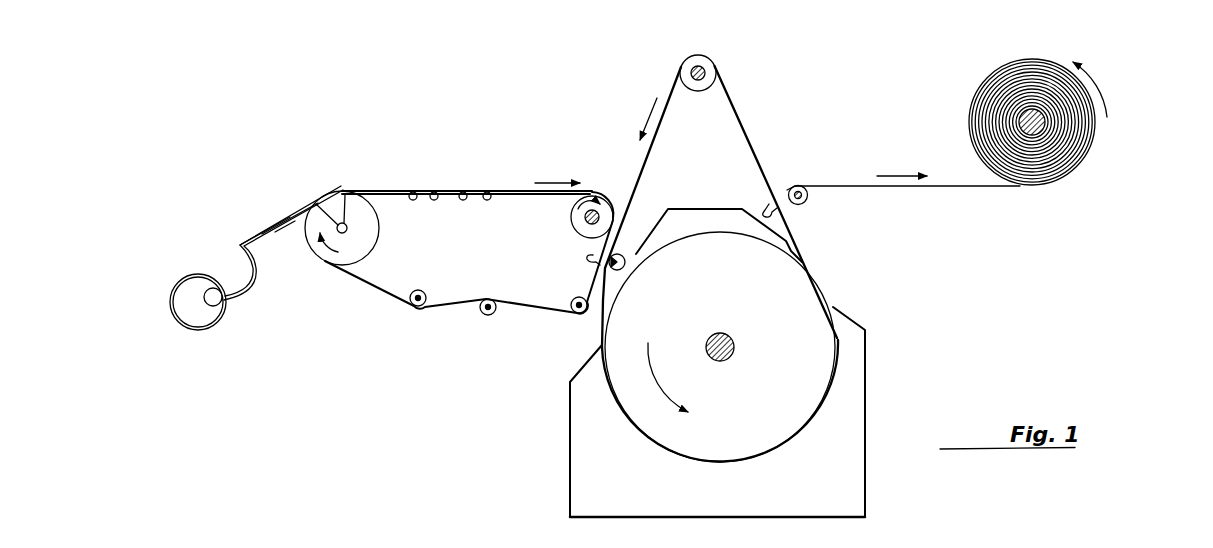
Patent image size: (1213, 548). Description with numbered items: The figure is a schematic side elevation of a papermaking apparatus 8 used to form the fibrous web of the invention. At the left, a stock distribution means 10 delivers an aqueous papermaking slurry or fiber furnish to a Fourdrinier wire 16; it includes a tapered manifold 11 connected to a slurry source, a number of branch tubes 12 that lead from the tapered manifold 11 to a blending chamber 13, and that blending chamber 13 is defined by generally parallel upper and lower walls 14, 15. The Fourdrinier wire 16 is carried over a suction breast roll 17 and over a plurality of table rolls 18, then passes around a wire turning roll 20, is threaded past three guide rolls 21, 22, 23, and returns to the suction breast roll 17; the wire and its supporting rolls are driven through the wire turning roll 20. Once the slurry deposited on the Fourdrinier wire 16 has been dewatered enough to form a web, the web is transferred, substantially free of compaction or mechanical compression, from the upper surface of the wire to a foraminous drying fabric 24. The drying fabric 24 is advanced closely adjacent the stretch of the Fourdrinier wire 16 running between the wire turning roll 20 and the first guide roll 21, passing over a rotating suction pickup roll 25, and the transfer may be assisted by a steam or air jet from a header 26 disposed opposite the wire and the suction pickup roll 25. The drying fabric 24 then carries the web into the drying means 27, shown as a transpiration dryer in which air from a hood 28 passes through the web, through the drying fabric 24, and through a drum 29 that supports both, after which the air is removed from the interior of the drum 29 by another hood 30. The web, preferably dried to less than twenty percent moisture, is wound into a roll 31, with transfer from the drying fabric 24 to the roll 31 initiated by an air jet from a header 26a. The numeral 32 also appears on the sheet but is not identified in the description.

The papermaking apparatus 8 is at (407, 155).
The stock distribution means 10 is at (234, 266).
The tapered manifold 11 is at (218, 323).
The branch tubes 12 is at (250, 277).
The blending chamber 13 is at (258, 226).
The upper wall 14 is at (278, 216).
The lower wall 15 is at (278, 229).
The Fourdrinier wire 16 is at (373, 290).
The suction breast roll 17 is at (380, 238).
The table rolls 18 is at (417, 200).
The wire turning roll 20 is at (572, 220).
The first guide roll 21 is at (572, 302).
The guide roll 22 is at (483, 313).
The guide roll 23 is at (425, 293).
The foraminous drying fabric 24 is at (672, 90).
The suction pickup roll 25 is at (622, 253).
The header 26 is at (585, 258).
The header 26a is at (762, 206).
The drying means 27 is at (567, 412).
The hood 28 is at (570, 472).
The drum 29 is at (802, 310).
The hood 30 is at (712, 207).
The roll 31 is at (987, 105).
The station 32 is at (278, 547).